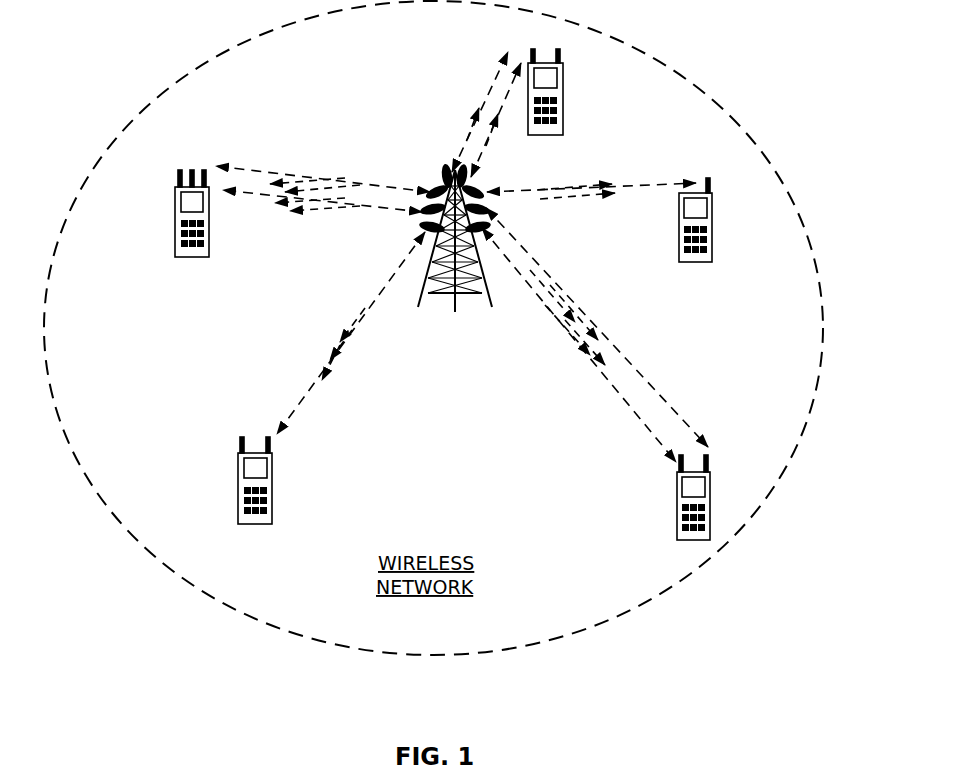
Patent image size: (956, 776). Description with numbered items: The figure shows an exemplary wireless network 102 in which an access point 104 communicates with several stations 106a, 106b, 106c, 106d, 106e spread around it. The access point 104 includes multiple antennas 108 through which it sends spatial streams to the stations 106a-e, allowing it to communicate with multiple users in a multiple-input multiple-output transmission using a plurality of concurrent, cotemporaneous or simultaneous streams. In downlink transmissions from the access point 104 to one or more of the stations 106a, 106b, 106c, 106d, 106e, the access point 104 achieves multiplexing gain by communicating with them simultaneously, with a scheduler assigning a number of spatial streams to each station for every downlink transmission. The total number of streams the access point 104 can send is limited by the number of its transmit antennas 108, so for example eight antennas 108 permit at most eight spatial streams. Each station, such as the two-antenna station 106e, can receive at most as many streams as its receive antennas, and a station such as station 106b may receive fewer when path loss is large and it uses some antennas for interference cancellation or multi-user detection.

The wireless network 102 is at (433, 328).
The access point 104 is at (463, 264).
The station 106a is at (150, 213).
The station 106b is at (588, 92).
The station 106c is at (732, 220).
The station 106d is at (653, 497).
The station 106e is at (214, 480).
The antennas 108 is at (462, 257).